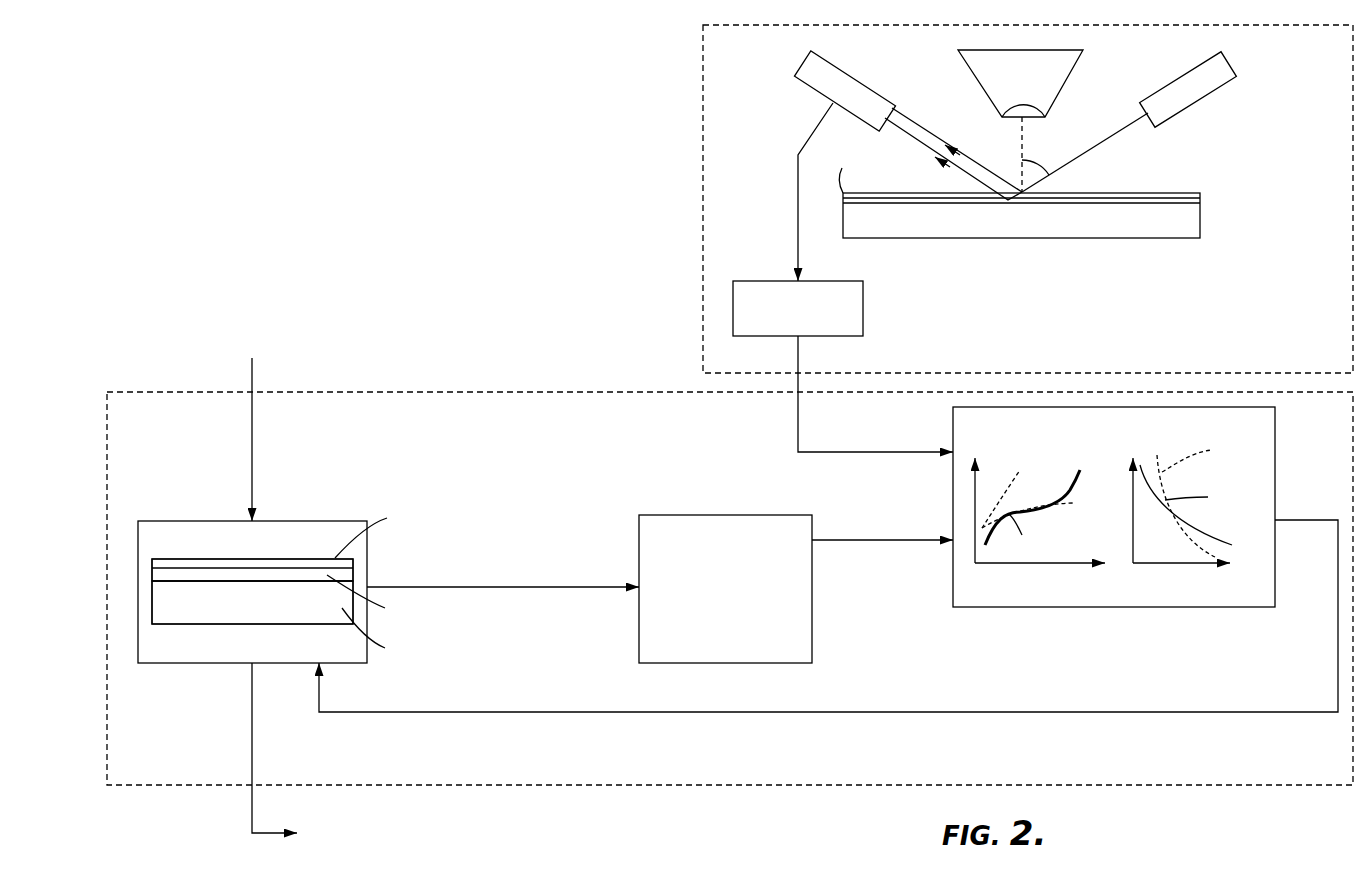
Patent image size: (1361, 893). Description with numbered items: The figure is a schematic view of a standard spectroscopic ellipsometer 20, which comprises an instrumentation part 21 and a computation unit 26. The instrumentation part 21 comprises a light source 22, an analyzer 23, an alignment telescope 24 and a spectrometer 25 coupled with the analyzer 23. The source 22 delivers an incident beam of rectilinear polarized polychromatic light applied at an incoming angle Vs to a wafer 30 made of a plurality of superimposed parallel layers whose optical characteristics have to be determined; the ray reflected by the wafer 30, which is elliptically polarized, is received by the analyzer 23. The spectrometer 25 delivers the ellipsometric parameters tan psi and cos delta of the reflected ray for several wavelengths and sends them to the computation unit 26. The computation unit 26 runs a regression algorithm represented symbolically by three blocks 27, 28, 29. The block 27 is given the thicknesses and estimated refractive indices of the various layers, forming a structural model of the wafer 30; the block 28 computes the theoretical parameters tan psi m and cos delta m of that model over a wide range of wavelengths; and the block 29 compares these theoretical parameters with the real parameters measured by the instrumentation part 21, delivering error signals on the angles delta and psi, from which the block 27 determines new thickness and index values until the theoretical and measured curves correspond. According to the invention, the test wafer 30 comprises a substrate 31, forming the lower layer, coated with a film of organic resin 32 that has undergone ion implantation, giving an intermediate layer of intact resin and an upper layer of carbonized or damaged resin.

The spectroscopic ellipsometer 20 is at (462, 213).
The instrumentation part 21 is at (703, 283).
The light source 22 is at (1183, 72).
The analyzer 23 is at (871, 90).
The alignment telescope 24 is at (992, 104).
The spectrometer 25 is at (863, 328).
The computation unit 26 is at (518, 392).
The block 27 is at (178, 665).
The block 28 is at (812, 638).
The block 29 is at (1100, 607).
The wafer 30 is at (1212, 222).
The substrate 31 is at (252, 610).
The film of organic resin 32 is at (168, 555).